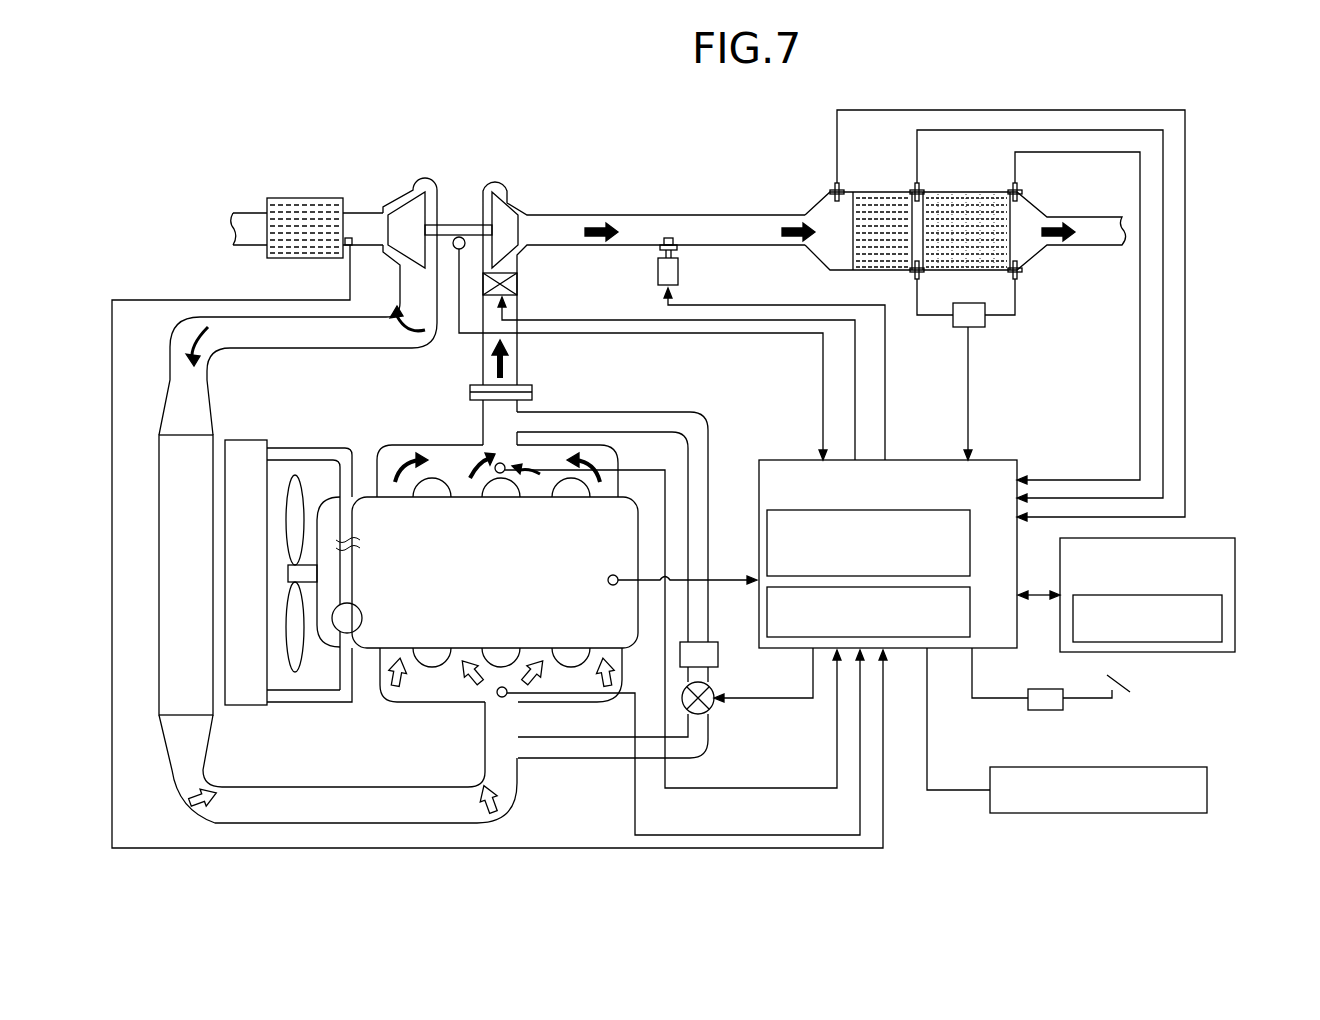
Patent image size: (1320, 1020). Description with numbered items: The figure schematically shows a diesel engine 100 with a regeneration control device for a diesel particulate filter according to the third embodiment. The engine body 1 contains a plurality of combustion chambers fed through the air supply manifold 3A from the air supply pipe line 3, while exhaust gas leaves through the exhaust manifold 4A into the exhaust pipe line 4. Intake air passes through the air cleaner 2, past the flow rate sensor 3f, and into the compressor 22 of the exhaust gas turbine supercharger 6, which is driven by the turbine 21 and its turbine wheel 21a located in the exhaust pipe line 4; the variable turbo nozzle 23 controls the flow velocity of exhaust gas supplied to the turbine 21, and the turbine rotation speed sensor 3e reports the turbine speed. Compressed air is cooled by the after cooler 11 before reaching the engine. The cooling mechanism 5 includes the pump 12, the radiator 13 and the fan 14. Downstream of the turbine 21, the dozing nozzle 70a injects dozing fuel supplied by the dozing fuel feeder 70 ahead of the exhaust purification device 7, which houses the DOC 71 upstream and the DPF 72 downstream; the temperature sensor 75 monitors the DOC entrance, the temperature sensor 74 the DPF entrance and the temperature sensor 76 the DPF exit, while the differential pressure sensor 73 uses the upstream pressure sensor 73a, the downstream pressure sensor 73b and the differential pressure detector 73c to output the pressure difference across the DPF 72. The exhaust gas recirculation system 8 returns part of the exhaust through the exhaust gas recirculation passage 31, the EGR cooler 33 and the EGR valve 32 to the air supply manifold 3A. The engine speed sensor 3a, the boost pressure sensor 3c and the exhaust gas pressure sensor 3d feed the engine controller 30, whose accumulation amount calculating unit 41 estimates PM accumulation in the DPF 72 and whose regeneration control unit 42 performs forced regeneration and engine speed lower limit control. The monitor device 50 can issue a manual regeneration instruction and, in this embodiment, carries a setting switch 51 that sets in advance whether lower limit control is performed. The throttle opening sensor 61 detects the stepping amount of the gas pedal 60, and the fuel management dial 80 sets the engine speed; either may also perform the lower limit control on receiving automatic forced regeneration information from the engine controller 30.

The diesel engine 100 is at (176, 166).
The air cleaner 2 is at (305, 198).
The flow rate sensor 3f is at (367, 247).
The compressor 22 is at (418, 177).
The turbine rotation speed sensor 3e is at (459, 237).
The turbine 21 is at (495, 183).
The turbine wheel 21a is at (512, 206).
The exhaust gas turbine supercharger 6 is at (516, 150).
The dozing nozzle 70a is at (670, 238).
The dozing fuel feeder 70 is at (680, 268).
The exhaust purification device 7 is at (807, 153).
The temperature sensor 75 is at (831, 188).
The DOC (Diesel Oxidation Catalyst) 71 is at (871, 192).
The temperature sensor 74 is at (925, 186).
The DPF 72 is at (980, 192).
The temperature sensor 76 is at (1021, 187).
The pressure sensor 73a is at (922, 278).
The pressure sensor 73b is at (1020, 278).
The differential pressure detector 73c is at (986, 318).
The differential pressure sensor 73 is at (949, 333).
The variable turbo nozzle 23 is at (487, 297).
The exhaust pipe line 4 is at (520, 356).
The exhaust gas recirculation passage 31 is at (627, 412).
The cooling mechanism 5 is at (298, 417).
The exhaust manifold 4A is at (433, 460).
The exhaust gas pressure sensor 3d is at (497, 463).
The exhaust gas recirculation system 8 is at (722, 449).
The engine controller 30 is at (995, 460).
The engine body 1 is at (623, 528).
The fan 14 is at (300, 500).
The radiator 13 is at (247, 705).
The engine speed sensor 3a is at (607, 580).
The pump 12 is at (363, 618).
The after cooler 11 is at (175, 683).
The air supply pipe line 3 is at (328, 823).
The air supply manifold 3A is at (433, 700).
The boost pressure sensor 3c is at (500, 697).
The EGR cooler 33 is at (718, 655).
The EGR valve 32 is at (700, 716).
The accumulation amount calculating unit 41 is at (972, 545).
The regeneration control unit 42 is at (972, 613).
The monitor device 50 is at (1217, 537).
The setting switch 51 is at (1193, 643).
The throttle opening sensor 61 is at (1042, 712).
The gas pedal 60 is at (1113, 704).
The fuel management dial 80 is at (1173, 766).